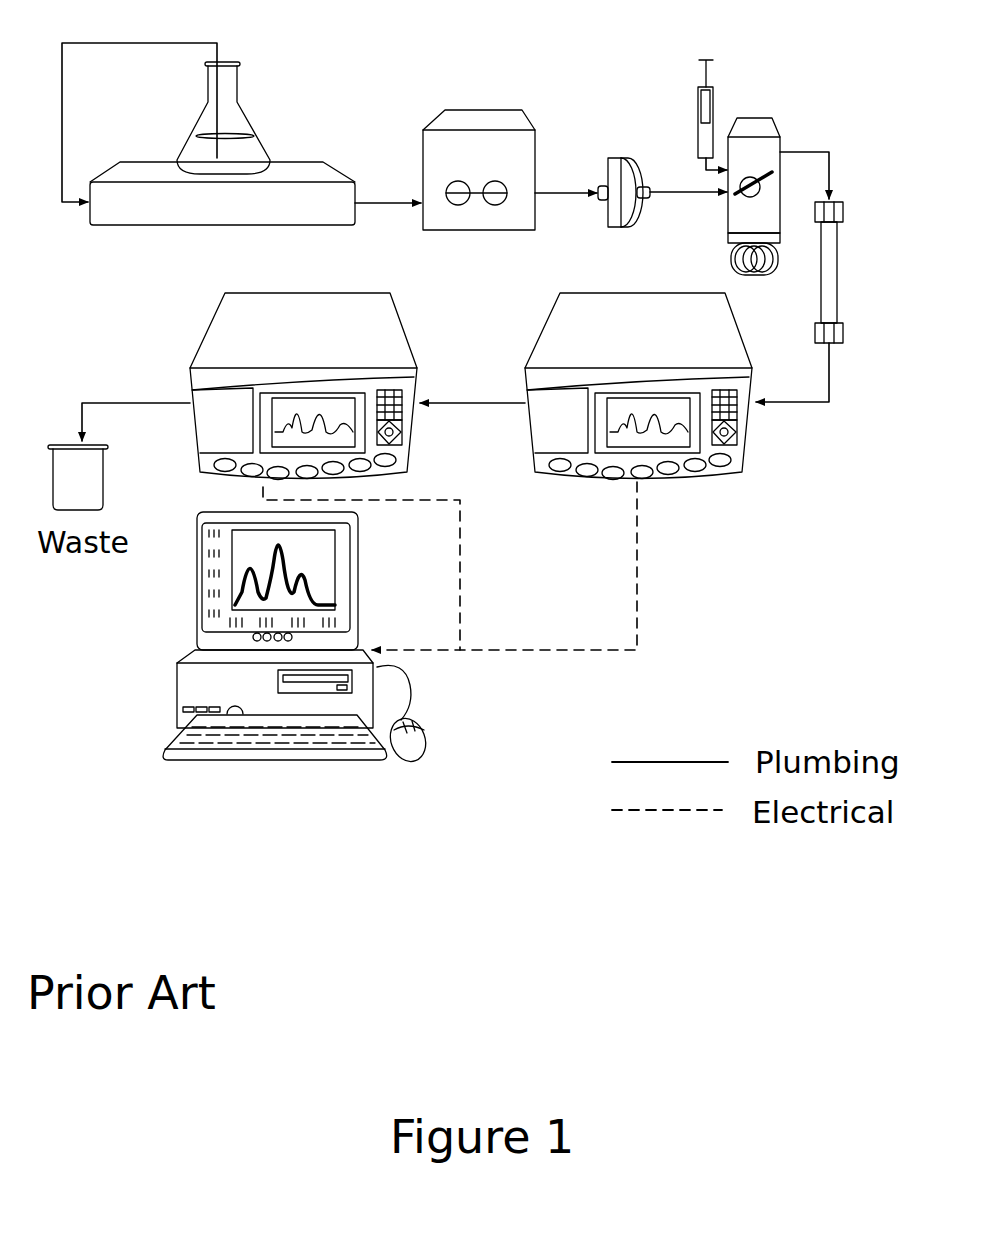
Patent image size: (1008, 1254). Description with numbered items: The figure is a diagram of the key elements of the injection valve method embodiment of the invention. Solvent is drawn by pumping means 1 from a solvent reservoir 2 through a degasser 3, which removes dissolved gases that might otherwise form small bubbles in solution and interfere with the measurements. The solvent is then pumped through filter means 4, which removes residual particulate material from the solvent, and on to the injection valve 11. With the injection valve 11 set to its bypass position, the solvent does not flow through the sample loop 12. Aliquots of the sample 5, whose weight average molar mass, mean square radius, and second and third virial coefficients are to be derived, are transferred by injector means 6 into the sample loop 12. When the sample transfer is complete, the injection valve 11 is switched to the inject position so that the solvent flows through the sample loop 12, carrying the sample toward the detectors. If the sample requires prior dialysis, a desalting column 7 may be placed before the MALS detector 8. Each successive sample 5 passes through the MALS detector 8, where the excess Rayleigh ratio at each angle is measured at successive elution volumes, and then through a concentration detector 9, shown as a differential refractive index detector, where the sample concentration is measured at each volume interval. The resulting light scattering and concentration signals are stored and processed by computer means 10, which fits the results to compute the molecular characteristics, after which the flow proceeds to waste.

The pumping means 1 is at (477, 102).
The solvent reservoir 2 is at (262, 137).
The degasser 3 is at (292, 232).
The filter means 4 is at (605, 230).
The sample 5 is at (703, 140).
The injector means 6 is at (698, 80).
The desalting column 7 is at (857, 255).
The MALS detector 8 is at (752, 470).
The concentration detector 9 is at (190, 335).
The computer means 10 is at (172, 682).
The injection valve 11 is at (788, 133).
The sample loop 12 is at (728, 258).